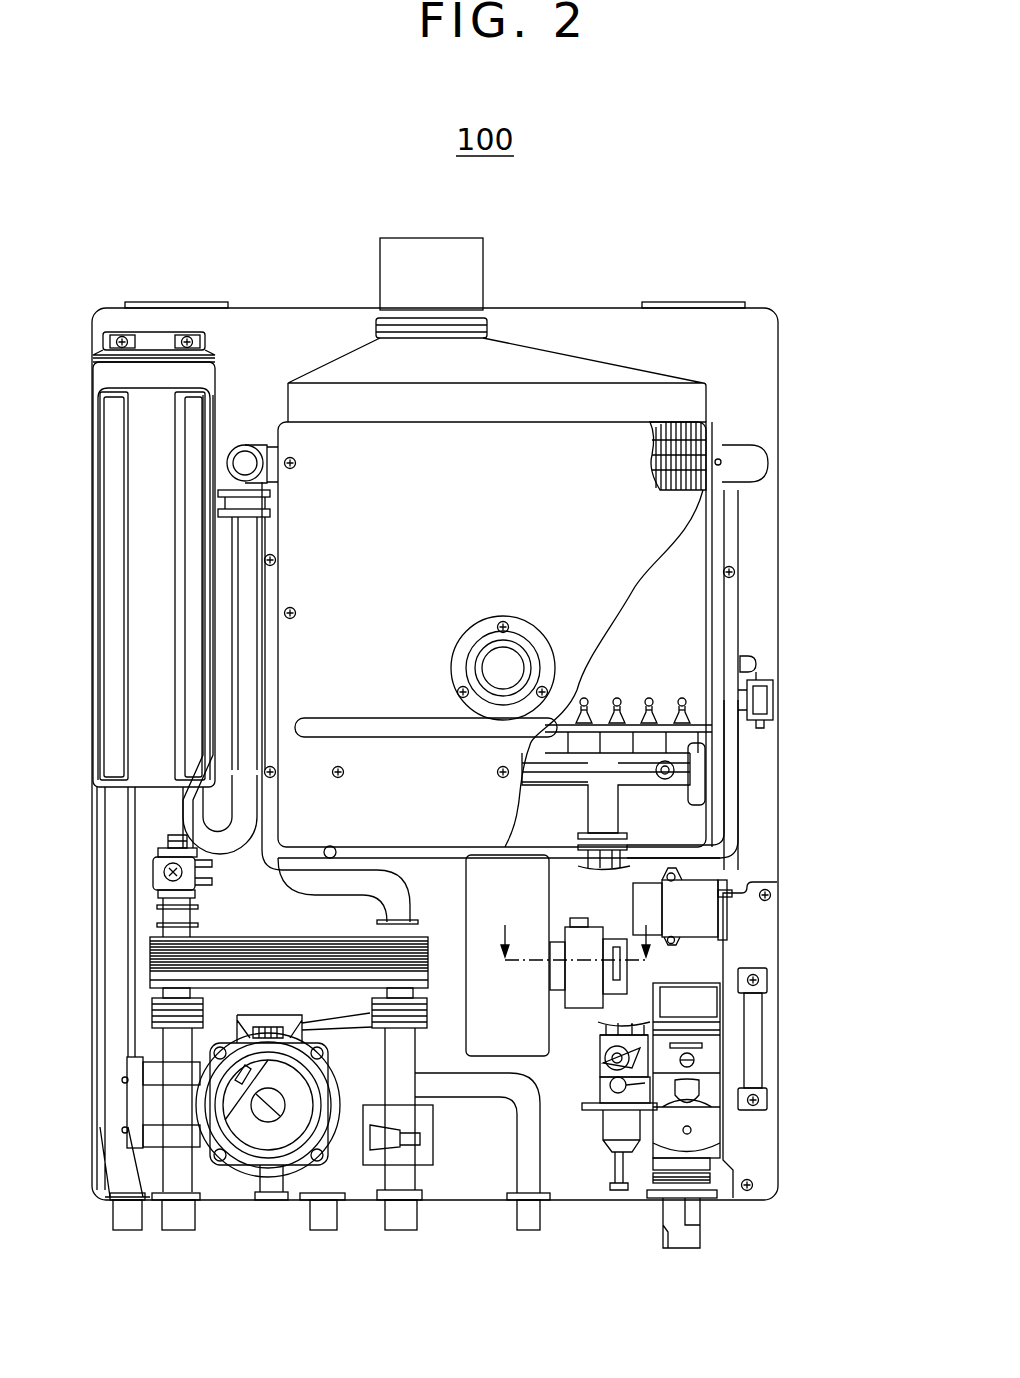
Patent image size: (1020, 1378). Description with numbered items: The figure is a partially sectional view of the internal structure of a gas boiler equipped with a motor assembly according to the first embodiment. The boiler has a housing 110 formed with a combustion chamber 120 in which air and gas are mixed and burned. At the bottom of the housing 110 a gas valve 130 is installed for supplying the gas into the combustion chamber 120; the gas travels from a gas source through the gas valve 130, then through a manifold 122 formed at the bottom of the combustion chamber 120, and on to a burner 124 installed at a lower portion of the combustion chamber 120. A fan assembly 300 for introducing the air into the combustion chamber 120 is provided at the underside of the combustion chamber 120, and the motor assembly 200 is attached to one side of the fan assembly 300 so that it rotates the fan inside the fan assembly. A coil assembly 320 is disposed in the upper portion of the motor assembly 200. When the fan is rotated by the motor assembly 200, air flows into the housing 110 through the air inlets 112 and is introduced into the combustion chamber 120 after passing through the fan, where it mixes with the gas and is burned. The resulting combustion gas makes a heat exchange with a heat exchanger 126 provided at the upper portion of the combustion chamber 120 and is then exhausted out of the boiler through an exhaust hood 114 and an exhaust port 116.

The housing 110 is at (740, 348).
The air inlets 112 is at (175, 302).
The exhaust hood 114 is at (548, 360).
The exhaust port 116 is at (392, 268).
The combustion chamber 120 is at (678, 548).
The manifold 122 is at (603, 817).
The burner 124 is at (622, 687).
The heat exchanger 126 is at (683, 440).
The gas valve 130 is at (620, 1090).
The motor assembly 200 is at (607, 997).
The fan assembly 300 is at (535, 1057).
The coil assembly 320 is at (600, 900).